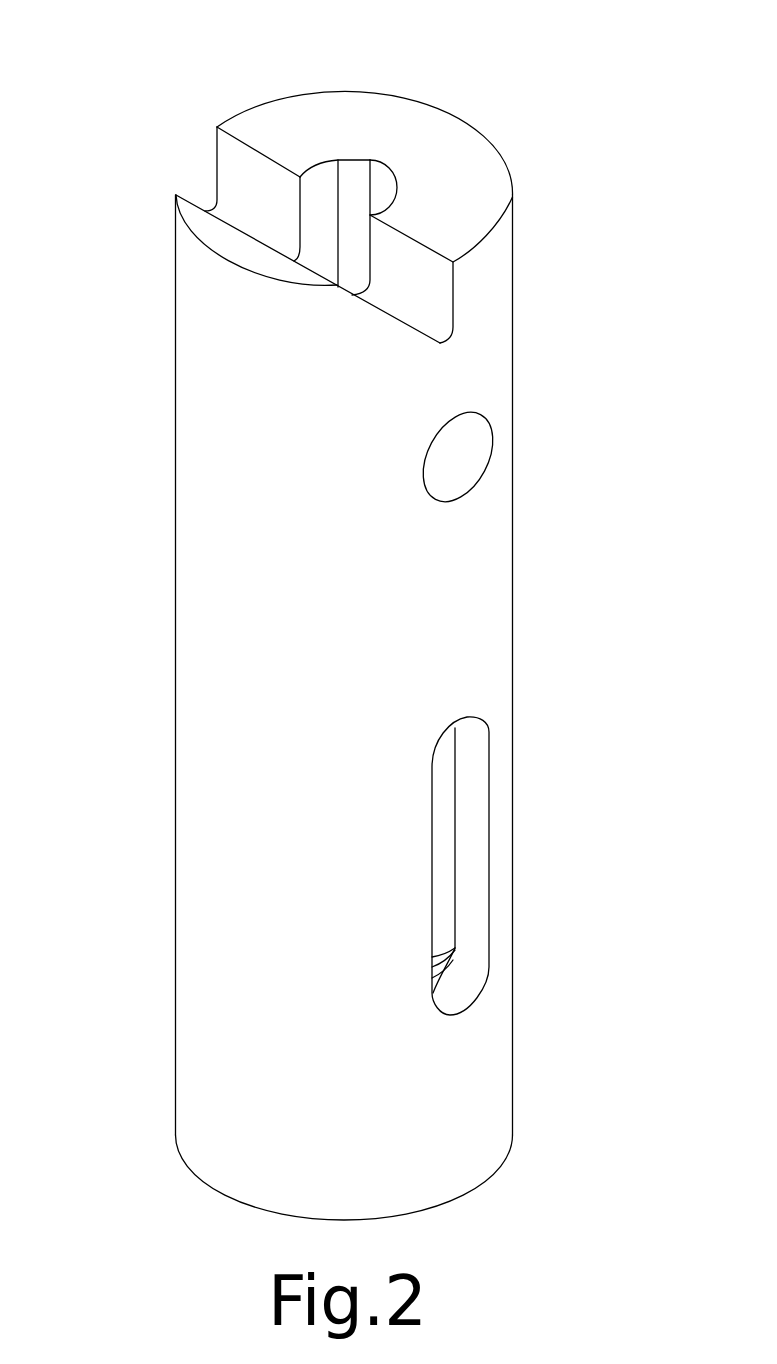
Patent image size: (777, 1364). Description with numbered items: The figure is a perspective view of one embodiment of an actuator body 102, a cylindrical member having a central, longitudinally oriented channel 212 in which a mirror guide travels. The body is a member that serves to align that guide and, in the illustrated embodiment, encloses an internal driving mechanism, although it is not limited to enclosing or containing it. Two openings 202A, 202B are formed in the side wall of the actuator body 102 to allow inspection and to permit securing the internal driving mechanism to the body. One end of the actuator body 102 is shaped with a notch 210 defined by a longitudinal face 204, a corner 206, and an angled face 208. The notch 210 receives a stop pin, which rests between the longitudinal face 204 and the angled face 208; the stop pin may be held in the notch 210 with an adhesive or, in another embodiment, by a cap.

The actuator body 102 is at (513, 566).
The opening 202A is at (487, 472).
The opening 202B is at (489, 860).
The longitudinal face 204 is at (453, 297).
The corner 206 is at (447, 340).
The angled face 208 is at (368, 303).
The notch 210 is at (165, 157).
The channel 212 is at (323, 162).